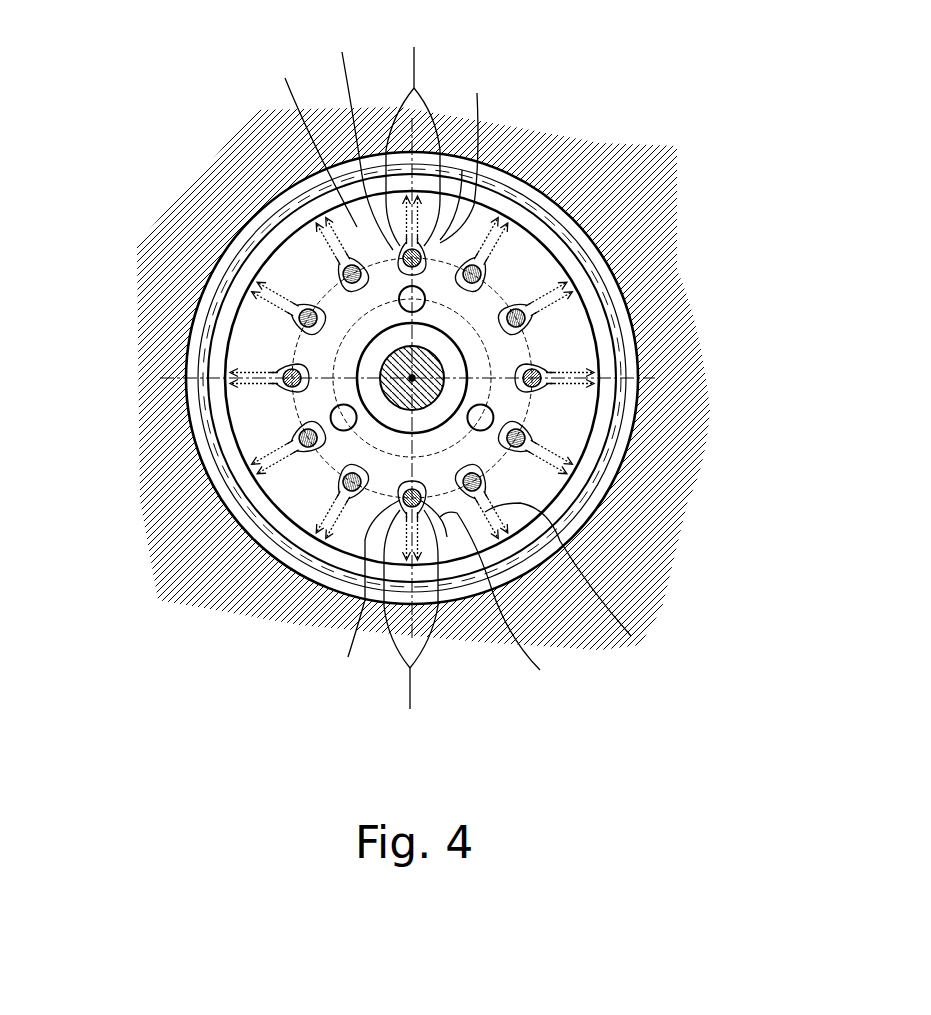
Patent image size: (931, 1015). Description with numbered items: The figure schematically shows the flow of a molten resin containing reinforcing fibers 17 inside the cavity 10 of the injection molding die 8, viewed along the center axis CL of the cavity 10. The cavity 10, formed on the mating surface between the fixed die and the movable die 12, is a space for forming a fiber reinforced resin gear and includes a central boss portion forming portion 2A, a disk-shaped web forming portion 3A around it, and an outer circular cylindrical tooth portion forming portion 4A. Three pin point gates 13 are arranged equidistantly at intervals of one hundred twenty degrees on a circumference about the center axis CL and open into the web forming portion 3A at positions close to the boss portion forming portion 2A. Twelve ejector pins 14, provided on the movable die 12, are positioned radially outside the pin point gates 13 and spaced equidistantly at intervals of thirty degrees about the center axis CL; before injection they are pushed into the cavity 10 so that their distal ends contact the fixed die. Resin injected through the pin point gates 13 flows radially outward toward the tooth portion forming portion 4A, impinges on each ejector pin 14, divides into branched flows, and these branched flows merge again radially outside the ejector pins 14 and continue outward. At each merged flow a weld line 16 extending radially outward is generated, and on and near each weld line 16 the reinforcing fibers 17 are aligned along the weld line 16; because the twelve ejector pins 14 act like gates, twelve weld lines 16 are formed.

The injection molding die 8 is at (173, 229).
The cavity 10 is at (250, 329).
The movable die 12 is at (215, 159).
The pin point gates 13 is at (346, 332).
The ejector pins 14 is at (396, 359).
The weld line 16 is at (578, 380).
The reinforcing fibers 17 is at (446, 362).
The boss portion forming portion 2A is at (337, 429).
The web forming portion 3A is at (312, 143).
The tooth portion forming portion 4A is at (602, 289).
The center axis CL is at (412, 378).